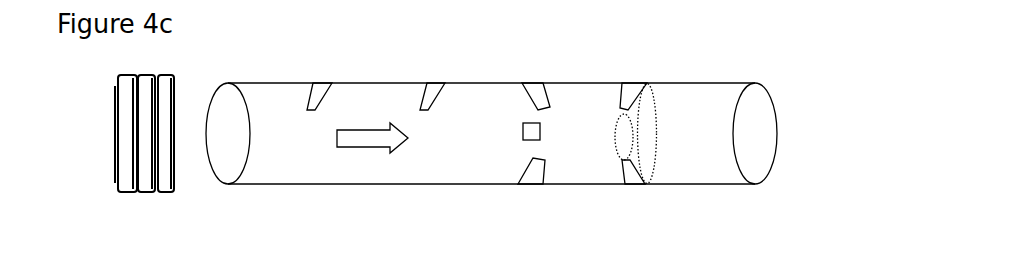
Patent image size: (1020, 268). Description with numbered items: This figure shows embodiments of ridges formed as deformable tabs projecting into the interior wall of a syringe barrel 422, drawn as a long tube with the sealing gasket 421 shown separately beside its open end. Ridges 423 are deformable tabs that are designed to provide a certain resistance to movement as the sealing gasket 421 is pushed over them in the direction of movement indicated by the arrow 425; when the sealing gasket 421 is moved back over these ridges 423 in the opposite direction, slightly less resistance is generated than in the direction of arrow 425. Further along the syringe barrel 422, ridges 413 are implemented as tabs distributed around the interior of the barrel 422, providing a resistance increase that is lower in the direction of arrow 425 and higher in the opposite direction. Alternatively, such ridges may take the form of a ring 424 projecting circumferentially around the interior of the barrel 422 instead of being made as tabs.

The sealing gasket 421 is at (127, 92).
The syringe barrel 422 is at (692, 88).
The ridges 423 is at (419, 73).
The ring 424 is at (621, 70).
The arrow 425 is at (374, 156).
The ridges 413 is at (555, 201).